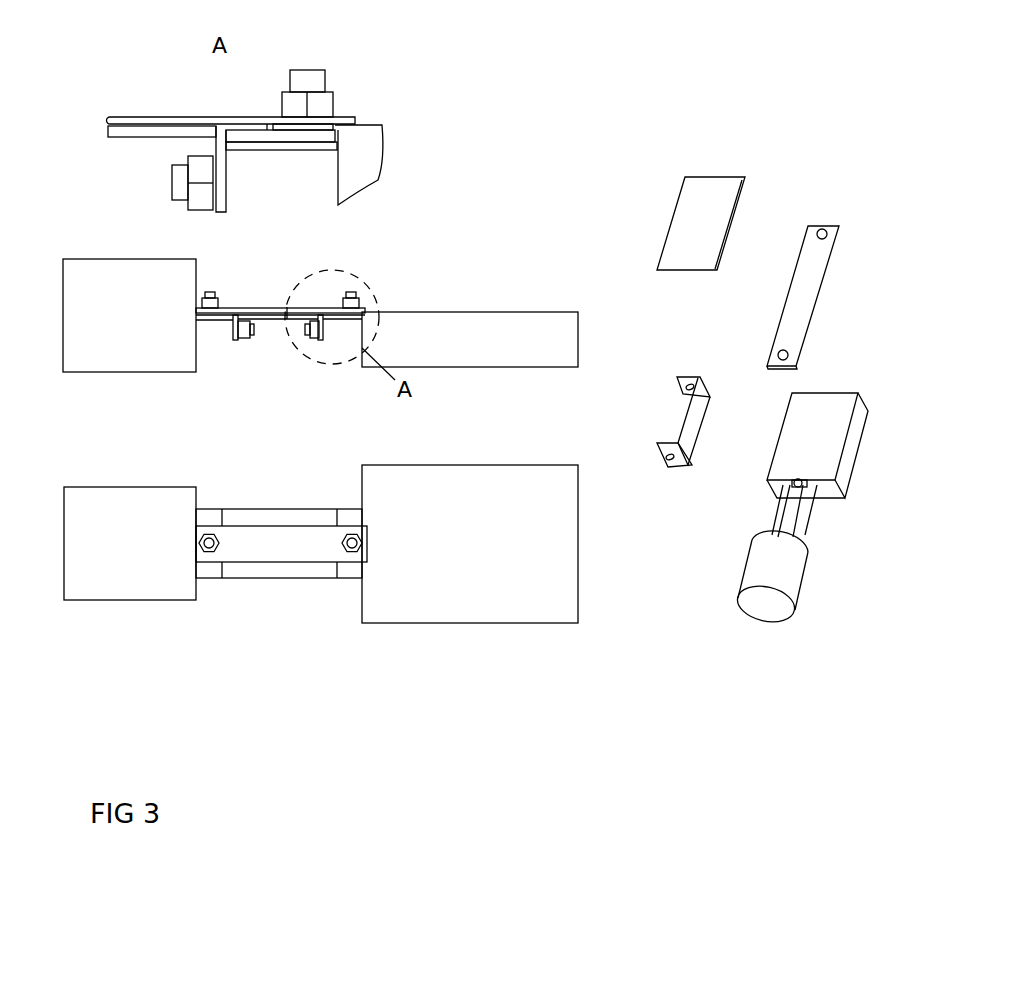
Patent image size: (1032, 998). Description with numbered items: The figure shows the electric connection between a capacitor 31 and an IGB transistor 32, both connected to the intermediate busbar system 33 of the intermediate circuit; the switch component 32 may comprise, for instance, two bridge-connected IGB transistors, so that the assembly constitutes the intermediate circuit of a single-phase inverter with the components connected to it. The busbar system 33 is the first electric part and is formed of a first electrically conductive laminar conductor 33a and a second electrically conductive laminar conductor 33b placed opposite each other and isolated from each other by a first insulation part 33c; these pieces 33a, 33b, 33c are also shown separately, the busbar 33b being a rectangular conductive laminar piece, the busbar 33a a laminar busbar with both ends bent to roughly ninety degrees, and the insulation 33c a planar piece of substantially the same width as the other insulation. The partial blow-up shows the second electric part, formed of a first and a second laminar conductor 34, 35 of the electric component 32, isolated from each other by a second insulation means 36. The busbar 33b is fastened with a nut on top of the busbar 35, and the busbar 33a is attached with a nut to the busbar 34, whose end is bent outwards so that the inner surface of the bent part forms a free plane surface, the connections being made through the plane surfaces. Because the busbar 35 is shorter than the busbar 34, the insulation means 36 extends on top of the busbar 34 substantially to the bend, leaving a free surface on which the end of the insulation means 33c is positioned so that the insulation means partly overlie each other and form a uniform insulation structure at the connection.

The capacitor 31 is at (845, 648).
The IGB transistor 32 is at (905, 358).
The intermediate busbar system 33 is at (272, 334).
The first electrically conductive laminar conductor 33a is at (118, 135).
The second electrically conductive laminar conductor 33b is at (113, 117).
The first insulation part 33c is at (107, 127).
The first electrically conductive laminar conductor of the electric component 34 is at (320, 148).
The second electrically conductive laminar conductor of the electric component 35 is at (335, 117).
The second insulation means 36 is at (340, 132).